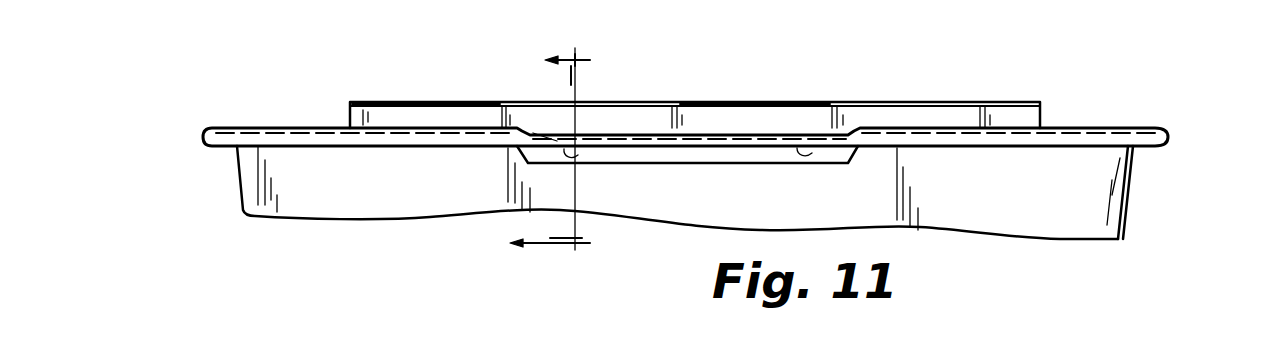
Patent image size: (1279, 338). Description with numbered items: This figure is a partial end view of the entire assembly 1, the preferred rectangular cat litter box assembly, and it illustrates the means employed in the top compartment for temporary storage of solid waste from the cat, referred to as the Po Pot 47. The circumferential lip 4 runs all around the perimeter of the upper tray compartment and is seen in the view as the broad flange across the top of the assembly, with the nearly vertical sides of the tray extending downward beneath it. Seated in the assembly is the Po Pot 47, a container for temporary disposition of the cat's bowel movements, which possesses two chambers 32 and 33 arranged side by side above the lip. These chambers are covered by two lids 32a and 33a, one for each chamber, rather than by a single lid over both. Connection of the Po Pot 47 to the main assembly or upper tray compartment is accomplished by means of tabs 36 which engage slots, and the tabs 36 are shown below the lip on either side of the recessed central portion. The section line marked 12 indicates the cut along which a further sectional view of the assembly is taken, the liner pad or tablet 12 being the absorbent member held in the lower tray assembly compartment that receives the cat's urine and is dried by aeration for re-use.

The entire assembly 1 is at (1128, 201).
The circumferential lip 4 is at (1168, 135).
The liner pad or tablet 12 is at (550, 155).
The chamber 32 is at (797, 116).
The lid 32a is at (716, 103).
The chamber 33 is at (437, 117).
The lid 33a is at (372, 103).
The tabs 36 is at (584, 146).
The Po Pot 47 is at (958, 110).